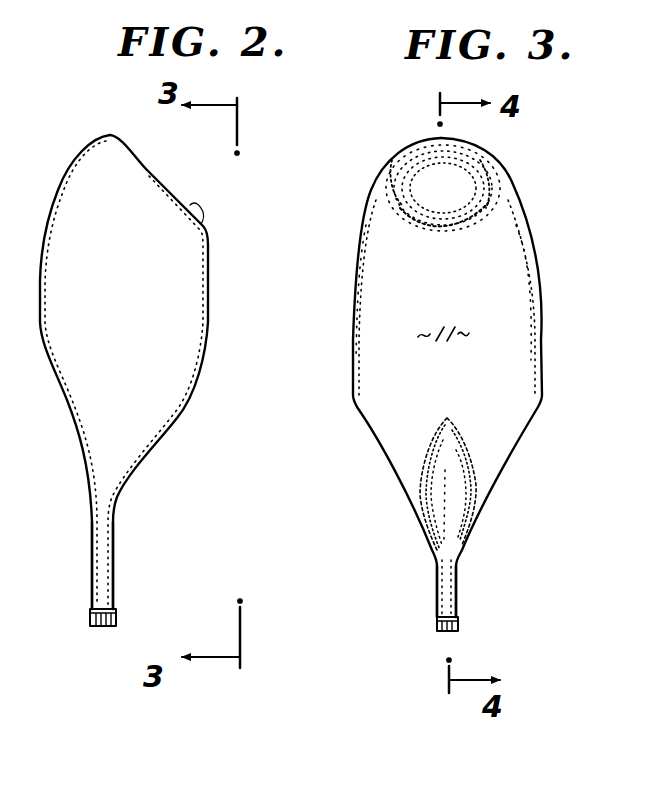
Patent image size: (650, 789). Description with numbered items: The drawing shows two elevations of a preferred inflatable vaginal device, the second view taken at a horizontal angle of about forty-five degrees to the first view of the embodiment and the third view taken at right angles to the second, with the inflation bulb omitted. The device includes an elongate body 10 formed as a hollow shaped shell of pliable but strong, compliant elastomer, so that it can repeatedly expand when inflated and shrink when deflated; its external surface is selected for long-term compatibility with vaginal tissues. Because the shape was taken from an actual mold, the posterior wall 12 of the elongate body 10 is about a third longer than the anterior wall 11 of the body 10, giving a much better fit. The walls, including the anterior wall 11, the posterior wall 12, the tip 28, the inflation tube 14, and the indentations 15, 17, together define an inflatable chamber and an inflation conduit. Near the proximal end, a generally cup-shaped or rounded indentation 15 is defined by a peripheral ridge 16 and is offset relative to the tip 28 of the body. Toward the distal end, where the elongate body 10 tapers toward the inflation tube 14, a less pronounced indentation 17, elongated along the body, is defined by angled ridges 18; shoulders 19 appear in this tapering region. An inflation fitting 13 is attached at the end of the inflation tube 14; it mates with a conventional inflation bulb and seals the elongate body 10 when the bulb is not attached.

In FIG. 2, the elongate body 10 is at (63, 462).
In FIG. 3, the elongate body 10 is at (321, 392).
In FIG. 2, the anterior wall 11 is at (208, 318).
In FIG. 3, the anterior wall 11 is at (443, 334).
In FIG. 2, the posterior wall 12 is at (45, 336).
In FIG. 2, the inflation fitting 13 is at (118, 618).
In FIG. 3, the inflation fitting 13 is at (459, 623).
In FIG. 2, the inflation tube 14 is at (115, 550).
In FIG. 3, the inflation tube 14 is at (447, 598).
In FIG. 2, the indentation 15 is at (149, 171).
In FIG. 3, the indentation 15 is at (457, 178).
In FIG. 2, the peripheral ridge 16 is at (200, 219).
In FIG. 3, the peripheral ridge 16 is at (395, 200).
In FIG. 3, the indentation 17 is at (450, 488).
In FIG. 2, the angled ridges 18 is at (160, 442).
In FIG. 3, the angled ridges 18 is at (423, 458).
In FIG. 3, the shoulder 19 is at (356, 405).
In FIG. 2, the tip 28 is at (110, 135).
In FIG. 3, the tip 28 is at (430, 138).